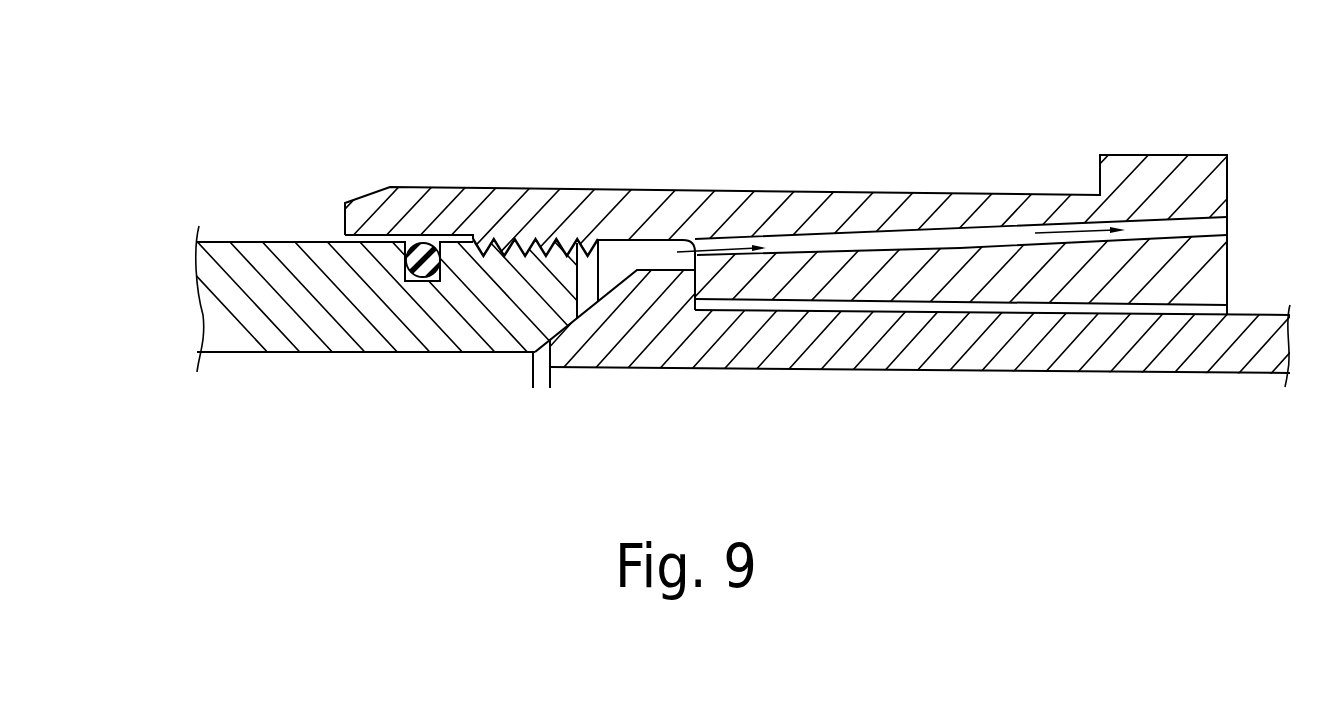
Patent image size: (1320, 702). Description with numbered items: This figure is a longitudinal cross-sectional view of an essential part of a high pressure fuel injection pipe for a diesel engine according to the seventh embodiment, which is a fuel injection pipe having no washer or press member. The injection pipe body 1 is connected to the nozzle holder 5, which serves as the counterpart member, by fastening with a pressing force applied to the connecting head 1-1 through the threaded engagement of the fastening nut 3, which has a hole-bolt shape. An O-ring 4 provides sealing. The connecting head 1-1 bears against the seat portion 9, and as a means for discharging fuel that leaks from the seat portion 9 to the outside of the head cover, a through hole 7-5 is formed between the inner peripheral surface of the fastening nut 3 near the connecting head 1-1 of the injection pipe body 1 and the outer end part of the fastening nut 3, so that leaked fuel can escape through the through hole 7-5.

The injection pipe body 1 is at (1267, 328).
The connecting head 1-1 is at (662, 293).
The fastening nut 3 is at (641, 203).
The O-ring 4 is at (424, 245).
The nozzle holder 5 is at (269, 256).
The seat portion 9 is at (575, 262).
The through hole 7-5 is at (933, 237).